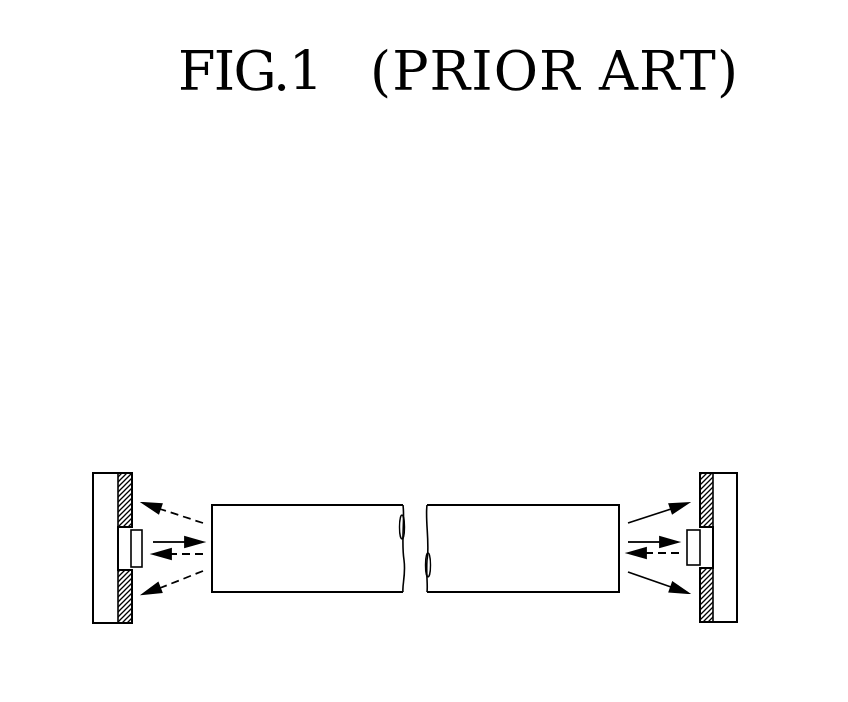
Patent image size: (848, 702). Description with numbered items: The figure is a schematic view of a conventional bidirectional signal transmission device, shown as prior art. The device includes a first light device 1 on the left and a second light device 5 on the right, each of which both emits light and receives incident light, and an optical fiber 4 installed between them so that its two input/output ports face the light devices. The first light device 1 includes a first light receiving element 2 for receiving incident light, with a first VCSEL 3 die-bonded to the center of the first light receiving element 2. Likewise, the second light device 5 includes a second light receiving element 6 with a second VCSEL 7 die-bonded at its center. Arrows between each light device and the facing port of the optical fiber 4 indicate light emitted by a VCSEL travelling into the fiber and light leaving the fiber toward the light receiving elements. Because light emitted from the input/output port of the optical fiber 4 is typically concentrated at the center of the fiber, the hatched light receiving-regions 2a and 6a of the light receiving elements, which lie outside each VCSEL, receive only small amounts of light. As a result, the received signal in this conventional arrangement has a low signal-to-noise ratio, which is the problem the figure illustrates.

The first light device 1 is at (82, 536).
The first light receiving element 2 is at (103, 552).
The light receiving-region 2a is at (122, 607).
The first VCSEL 3 is at (138, 555).
The optical fiber 4 is at (538, 510).
The second light device 5 is at (745, 533).
The second light receiving element 6 is at (728, 557).
The light receiving-region 6a is at (717, 607).
The second VCSEL 7 is at (692, 560).